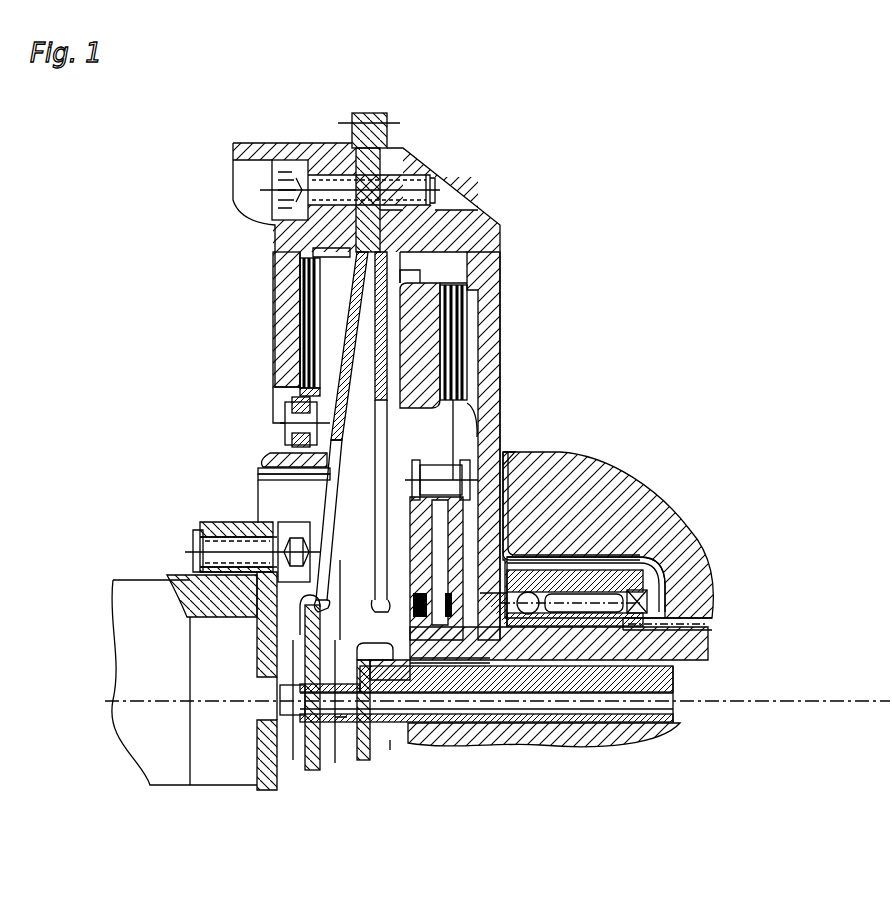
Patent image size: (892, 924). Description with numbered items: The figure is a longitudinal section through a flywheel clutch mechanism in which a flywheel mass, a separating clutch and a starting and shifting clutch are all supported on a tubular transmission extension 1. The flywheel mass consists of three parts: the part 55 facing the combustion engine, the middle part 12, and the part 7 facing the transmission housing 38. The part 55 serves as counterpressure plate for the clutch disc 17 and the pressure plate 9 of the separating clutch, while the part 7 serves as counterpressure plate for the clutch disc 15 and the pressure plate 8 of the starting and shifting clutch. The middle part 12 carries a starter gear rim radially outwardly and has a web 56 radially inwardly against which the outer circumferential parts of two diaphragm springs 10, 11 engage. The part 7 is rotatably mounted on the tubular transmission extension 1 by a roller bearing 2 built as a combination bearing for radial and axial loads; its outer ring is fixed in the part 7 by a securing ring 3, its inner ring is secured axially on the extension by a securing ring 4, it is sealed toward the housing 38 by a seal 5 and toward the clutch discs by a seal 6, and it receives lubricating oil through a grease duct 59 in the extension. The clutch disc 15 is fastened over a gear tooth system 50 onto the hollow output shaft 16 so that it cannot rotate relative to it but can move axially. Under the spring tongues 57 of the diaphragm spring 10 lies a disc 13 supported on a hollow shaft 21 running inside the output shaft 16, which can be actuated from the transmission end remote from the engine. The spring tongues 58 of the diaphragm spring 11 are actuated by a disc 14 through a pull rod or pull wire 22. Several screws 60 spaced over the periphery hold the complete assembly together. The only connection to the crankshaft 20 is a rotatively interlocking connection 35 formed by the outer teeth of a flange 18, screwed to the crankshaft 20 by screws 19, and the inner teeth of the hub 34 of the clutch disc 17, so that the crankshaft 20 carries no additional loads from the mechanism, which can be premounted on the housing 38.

The tubular transmission extension 1 is at (683, 642).
The roller bearing 2 is at (628, 582).
The securing ring 3 is at (652, 585).
The securing ring 4 is at (575, 582).
The seal 5 is at (650, 595).
The seal 6 is at (505, 565).
The flywheel mass part 7 is at (467, 233).
The pressure plate 8 is at (412, 276).
The pressure plate 9 is at (333, 313).
The diaphragm spring 10 is at (387, 333).
The diaphragm spring 11 is at (357, 342).
The middle part of the flywheel mass 12 is at (390, 122).
The disc 13 is at (368, 740).
The disc 14 is at (315, 767).
The clutch disc 15 is at (462, 440).
The output shaft 16 is at (650, 673).
The clutch disc 17 is at (268, 430).
The flange 18 is at (280, 495).
The screws 19 is at (213, 544).
The crankshaft 20 is at (230, 770).
The hollow shaft 21 is at (560, 717).
The pull rod or pull wire 22 is at (337, 740).
The hub 34 is at (263, 463).
The rotatively interlocking connection 35 is at (243, 475).
The transmission housing 38 is at (535, 488).
The gear tooth system 50 is at (452, 658).
The flywheel mass part 55 is at (303, 236).
The web 56 is at (392, 212).
The spring tongues 57 is at (373, 596).
The spring tongues 58 is at (323, 580).
The grease duct 59 is at (700, 628).
The screws 60 is at (289, 165).